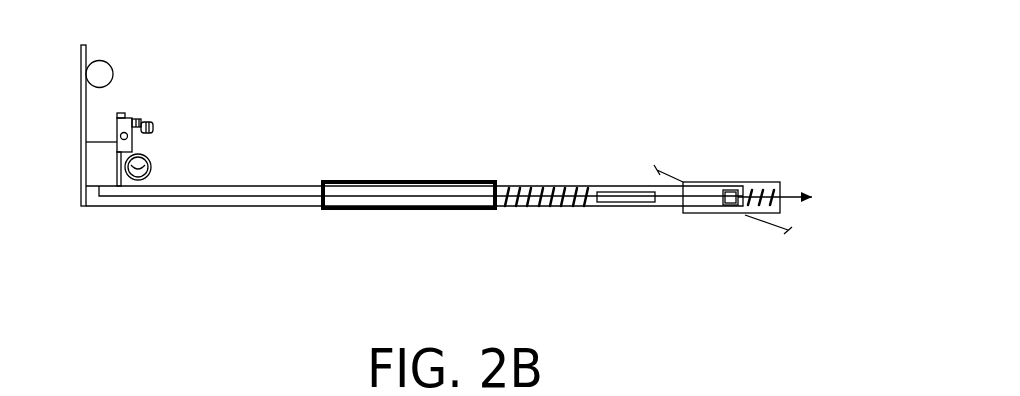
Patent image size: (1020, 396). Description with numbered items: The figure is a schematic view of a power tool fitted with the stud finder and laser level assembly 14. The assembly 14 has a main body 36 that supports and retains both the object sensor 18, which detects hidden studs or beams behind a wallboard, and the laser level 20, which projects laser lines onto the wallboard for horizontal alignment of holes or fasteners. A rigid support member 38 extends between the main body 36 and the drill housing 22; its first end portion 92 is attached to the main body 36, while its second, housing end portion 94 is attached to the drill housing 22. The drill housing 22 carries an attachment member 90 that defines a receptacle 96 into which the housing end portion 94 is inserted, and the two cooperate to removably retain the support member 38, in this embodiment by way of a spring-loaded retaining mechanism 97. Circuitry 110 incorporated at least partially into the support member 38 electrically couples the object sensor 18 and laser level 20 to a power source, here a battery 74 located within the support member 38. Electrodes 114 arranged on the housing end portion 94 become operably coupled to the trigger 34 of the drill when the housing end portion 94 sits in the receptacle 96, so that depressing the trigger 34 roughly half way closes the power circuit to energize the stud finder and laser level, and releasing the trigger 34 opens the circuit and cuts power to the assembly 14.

The stud finder and laser level assembly 14 is at (198, 60).
The laser level 20 is at (125, 85).
The object sensor 18 is at (140, 112).
The main body 36 is at (170, 143).
The support member 38 is at (283, 182).
The drill housing 22 is at (729, 181).
The receptacle 96 is at (755, 183).
The spring-loaded retaining mechanism 97 is at (773, 184).
The trigger 34 is at (795, 190).
The battery 74 is at (617, 202).
The housing end portion 94 is at (702, 205).
The attachment member 90 is at (716, 214).
The electrodes 114 is at (730, 206).
The first end portion 92 is at (95, 207).
The circuitry 110 is at (228, 196).